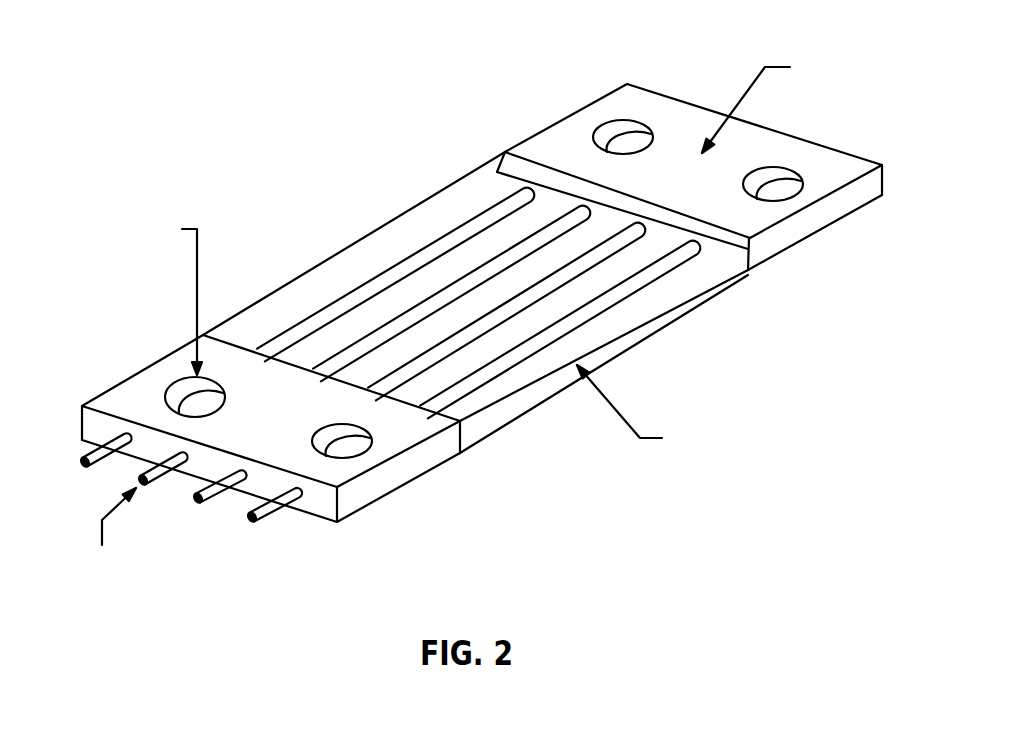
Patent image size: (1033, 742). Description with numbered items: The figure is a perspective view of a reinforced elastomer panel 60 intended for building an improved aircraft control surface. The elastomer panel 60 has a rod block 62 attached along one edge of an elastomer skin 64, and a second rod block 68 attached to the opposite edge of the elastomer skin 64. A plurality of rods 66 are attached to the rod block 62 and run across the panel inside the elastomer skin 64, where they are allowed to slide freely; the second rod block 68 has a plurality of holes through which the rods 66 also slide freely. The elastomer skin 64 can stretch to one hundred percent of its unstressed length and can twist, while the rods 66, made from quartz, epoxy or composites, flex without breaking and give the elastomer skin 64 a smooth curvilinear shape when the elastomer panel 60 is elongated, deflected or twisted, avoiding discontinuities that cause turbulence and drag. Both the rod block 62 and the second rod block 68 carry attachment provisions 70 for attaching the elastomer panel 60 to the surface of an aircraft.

The elastomer panel 60 is at (360, 91).
The rod block 62 is at (553, 124).
The elastomer skin 64 is at (673, 308).
The rods 66 is at (57, 467).
The second rod block 68 is at (327, 512).
The attachment provisions 70 is at (645, 121).